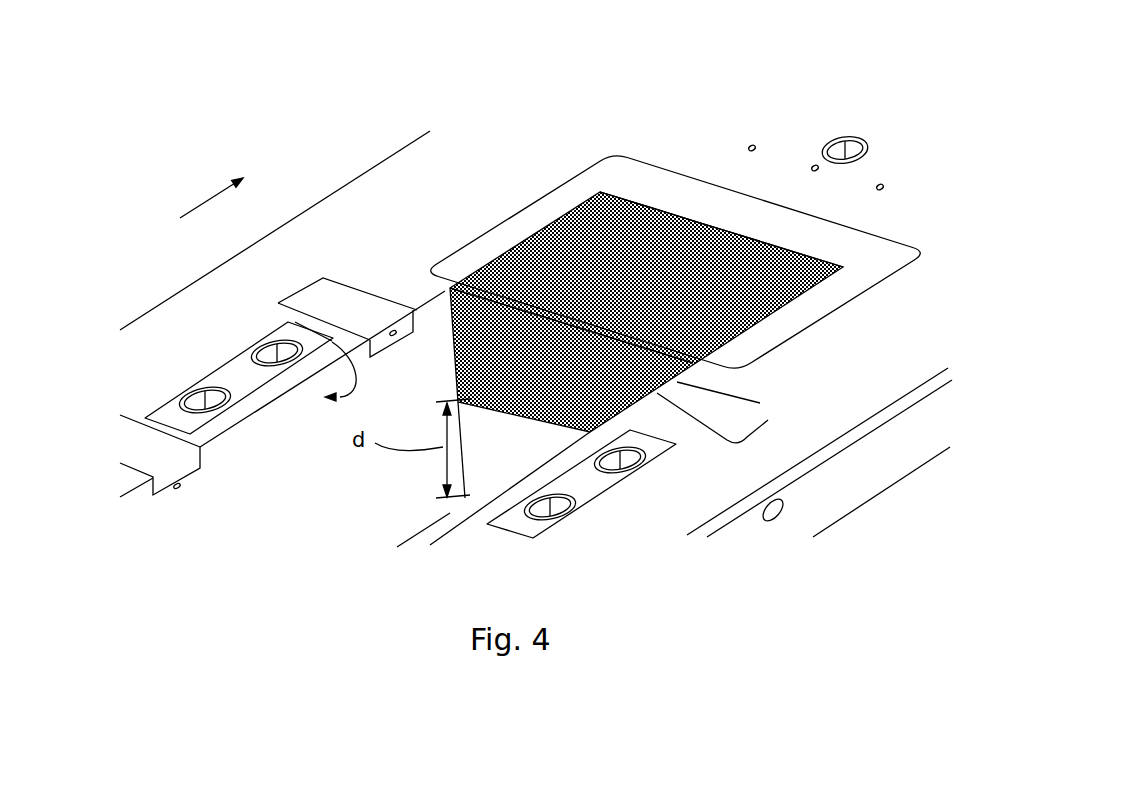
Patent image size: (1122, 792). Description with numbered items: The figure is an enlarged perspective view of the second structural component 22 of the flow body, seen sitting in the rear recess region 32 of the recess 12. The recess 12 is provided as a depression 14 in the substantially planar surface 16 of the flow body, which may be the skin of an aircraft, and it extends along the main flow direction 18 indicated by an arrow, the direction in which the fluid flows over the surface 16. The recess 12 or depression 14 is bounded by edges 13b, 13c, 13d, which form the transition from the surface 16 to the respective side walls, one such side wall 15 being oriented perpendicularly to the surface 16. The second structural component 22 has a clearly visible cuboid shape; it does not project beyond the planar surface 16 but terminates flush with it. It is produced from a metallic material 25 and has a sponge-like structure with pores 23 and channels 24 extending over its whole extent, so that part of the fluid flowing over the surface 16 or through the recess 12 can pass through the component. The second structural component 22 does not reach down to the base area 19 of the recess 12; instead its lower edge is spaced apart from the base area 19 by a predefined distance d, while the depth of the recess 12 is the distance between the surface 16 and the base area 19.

The recess 12 is at (412, 385).
The depression 14 is at (322, 369).
The side wall 15 is at (278, 303).
The surface 16 is at (307, 247).
The main flow direction 18 is at (192, 207).
The base area 19 is at (447, 515).
The second structural component 22 is at (797, 283).
The pores 23 is at (638, 230).
The channels 24 is at (677, 230).
The metallic material 25 is at (733, 243).
The rear recess region 32 is at (833, 247).
The edge 13b is at (267, 400).
The edge 13c is at (622, 193).
The edge 13d is at (630, 408).